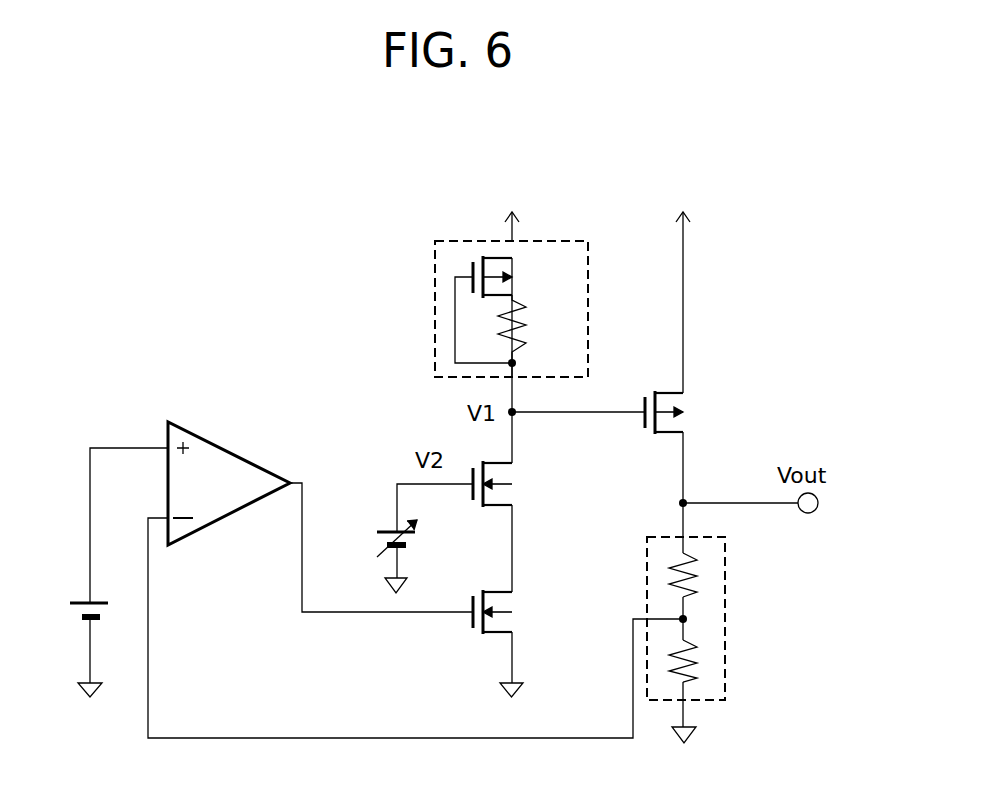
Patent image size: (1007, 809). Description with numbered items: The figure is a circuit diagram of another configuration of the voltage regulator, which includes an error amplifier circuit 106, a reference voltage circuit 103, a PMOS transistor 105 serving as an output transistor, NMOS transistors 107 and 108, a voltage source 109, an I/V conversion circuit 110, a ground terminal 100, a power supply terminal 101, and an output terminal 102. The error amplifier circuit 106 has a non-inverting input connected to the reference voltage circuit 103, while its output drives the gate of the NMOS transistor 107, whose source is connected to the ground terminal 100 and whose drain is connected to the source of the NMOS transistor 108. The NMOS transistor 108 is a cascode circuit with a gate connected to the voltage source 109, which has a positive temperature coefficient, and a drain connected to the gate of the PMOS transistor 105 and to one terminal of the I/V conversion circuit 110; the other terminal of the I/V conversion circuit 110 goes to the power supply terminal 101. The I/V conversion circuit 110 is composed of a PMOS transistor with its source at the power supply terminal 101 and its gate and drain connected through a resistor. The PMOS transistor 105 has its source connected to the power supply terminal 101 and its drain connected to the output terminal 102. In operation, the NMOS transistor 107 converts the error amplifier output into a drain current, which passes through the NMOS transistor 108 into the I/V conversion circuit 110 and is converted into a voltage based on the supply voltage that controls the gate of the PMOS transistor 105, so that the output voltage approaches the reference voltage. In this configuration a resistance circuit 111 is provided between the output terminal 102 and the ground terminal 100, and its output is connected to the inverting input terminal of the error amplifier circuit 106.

The ground terminal 100 is at (90, 706).
The power supply terminal 101 is at (514, 213).
The output terminal 102 is at (814, 512).
The reference voltage circuit 103 is at (82, 600).
The PMOS transistor 105 is at (685, 412).
The error amplifier circuit 106 is at (240, 452).
The NMOS transistor 107 is at (515, 612).
The NMOS transistor 108 is at (515, 484).
The voltage source 109 is at (378, 528).
The I/V conversion circuit 110 is at (433, 315).
The resistance circuit 111 is at (725, 620).